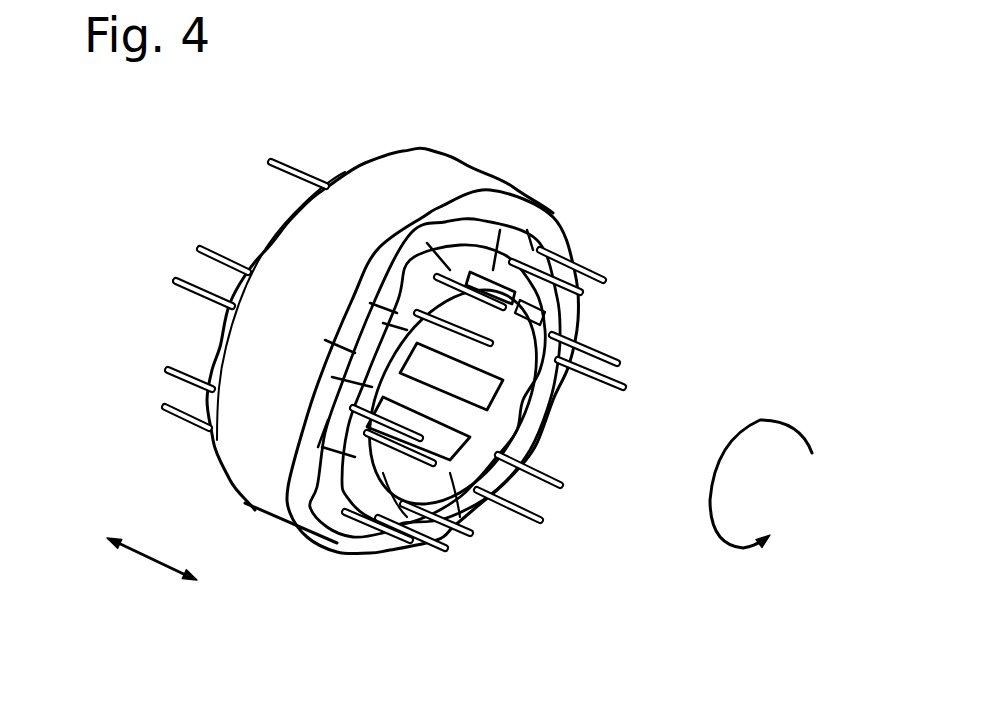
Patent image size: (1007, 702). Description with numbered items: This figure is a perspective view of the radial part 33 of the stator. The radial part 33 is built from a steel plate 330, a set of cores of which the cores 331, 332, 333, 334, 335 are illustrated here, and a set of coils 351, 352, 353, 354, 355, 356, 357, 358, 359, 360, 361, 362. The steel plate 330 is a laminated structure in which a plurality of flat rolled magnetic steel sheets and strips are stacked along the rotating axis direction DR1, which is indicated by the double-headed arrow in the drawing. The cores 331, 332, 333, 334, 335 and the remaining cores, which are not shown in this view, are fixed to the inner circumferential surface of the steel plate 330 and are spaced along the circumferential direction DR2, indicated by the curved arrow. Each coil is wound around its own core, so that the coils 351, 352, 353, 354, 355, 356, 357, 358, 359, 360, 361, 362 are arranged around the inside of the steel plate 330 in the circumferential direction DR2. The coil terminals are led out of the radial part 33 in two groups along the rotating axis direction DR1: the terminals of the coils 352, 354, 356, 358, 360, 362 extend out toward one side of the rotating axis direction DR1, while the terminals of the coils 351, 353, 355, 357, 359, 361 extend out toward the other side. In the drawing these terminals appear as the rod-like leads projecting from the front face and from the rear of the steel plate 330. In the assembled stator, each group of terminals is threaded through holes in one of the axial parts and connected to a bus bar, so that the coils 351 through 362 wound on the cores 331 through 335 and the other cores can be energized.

The radial part 33 is at (434, 94).
The steel plate 330 is at (260, 427).
The core 331 is at (483, 513).
The core 332 is at (537, 457).
The core 333 is at (530, 425).
The core 334 is at (577, 328).
The core 335 is at (557, 297).
The coil 351 is at (470, 517).
The coil 352 is at (490, 480).
The coil 353 is at (533, 440).
The coil 354 is at (623, 377).
The coil 355 is at (590, 272).
The coil 356 is at (528, 243).
The coil 357 is at (472, 252).
The coil 358 is at (413, 278).
The coil 359 is at (355, 352).
The coil 360 is at (287, 523).
The coil 361 is at (337, 537).
The coil 362 is at (385, 540).
The rotating axis direction DR1 is at (143, 557).
The circumferential direction DR2 is at (723, 470).